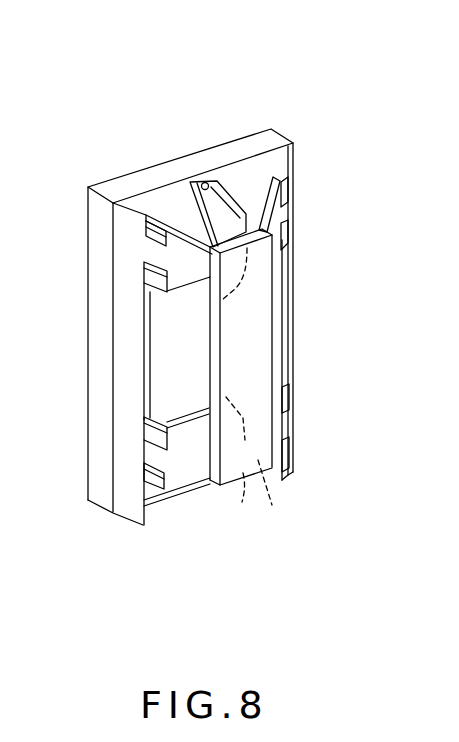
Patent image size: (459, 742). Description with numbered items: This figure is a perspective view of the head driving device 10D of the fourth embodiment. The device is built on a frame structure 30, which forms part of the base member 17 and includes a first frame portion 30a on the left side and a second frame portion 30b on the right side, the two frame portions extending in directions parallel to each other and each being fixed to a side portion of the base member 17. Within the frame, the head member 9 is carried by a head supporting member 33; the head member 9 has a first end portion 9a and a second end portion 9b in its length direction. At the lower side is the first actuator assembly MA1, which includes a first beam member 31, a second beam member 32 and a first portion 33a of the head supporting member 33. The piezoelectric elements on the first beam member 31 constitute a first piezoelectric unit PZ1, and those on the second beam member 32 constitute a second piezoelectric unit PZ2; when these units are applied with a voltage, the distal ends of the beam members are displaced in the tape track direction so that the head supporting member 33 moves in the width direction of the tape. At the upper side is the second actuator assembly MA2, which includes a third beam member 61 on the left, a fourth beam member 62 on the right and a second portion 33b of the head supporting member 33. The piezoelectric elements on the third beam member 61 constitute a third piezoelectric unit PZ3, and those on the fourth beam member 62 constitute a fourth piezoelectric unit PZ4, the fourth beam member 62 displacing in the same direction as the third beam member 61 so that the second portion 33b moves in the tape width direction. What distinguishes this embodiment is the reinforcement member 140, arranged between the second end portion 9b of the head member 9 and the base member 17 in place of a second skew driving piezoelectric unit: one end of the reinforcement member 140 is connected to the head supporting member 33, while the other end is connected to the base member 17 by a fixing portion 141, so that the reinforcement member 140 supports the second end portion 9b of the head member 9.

The head driving device 10D is at (300, 88).
The base member 17 is at (88, 210).
The frame structure 30 is at (132, 508).
The first frame portion 30a is at (128, 393).
The second frame portion 30b is at (296, 395).
The first beam member 31 is at (182, 476).
The second beam member 32 is at (292, 424).
The head supporting member 33 is at (266, 498).
The first portion of the head supporting member 33a is at (225, 412).
The second portion of the head supporting member 33b is at (222, 303).
The head member 9 is at (242, 356).
The first end portion of the head member 9a is at (240, 472).
The second end portion of the head member 9b is at (262, 245).
The third beam member 61 is at (150, 212).
The fourth beam member 62 is at (291, 200).
The reinforcement member 140 is at (222, 203).
The fixing portion 141 is at (207, 181).
The first actuator assembly MA1 is at (229, 498).
The second actuator assembly MA2 is at (178, 200).
The first piezoelectric unit PZ1 is at (160, 510).
The second piezoelectric unit PZ2 is at (291, 484).
The third piezoelectric unit PZ3 is at (136, 192).
The fourth piezoelectric unit PZ4 is at (308, 172).